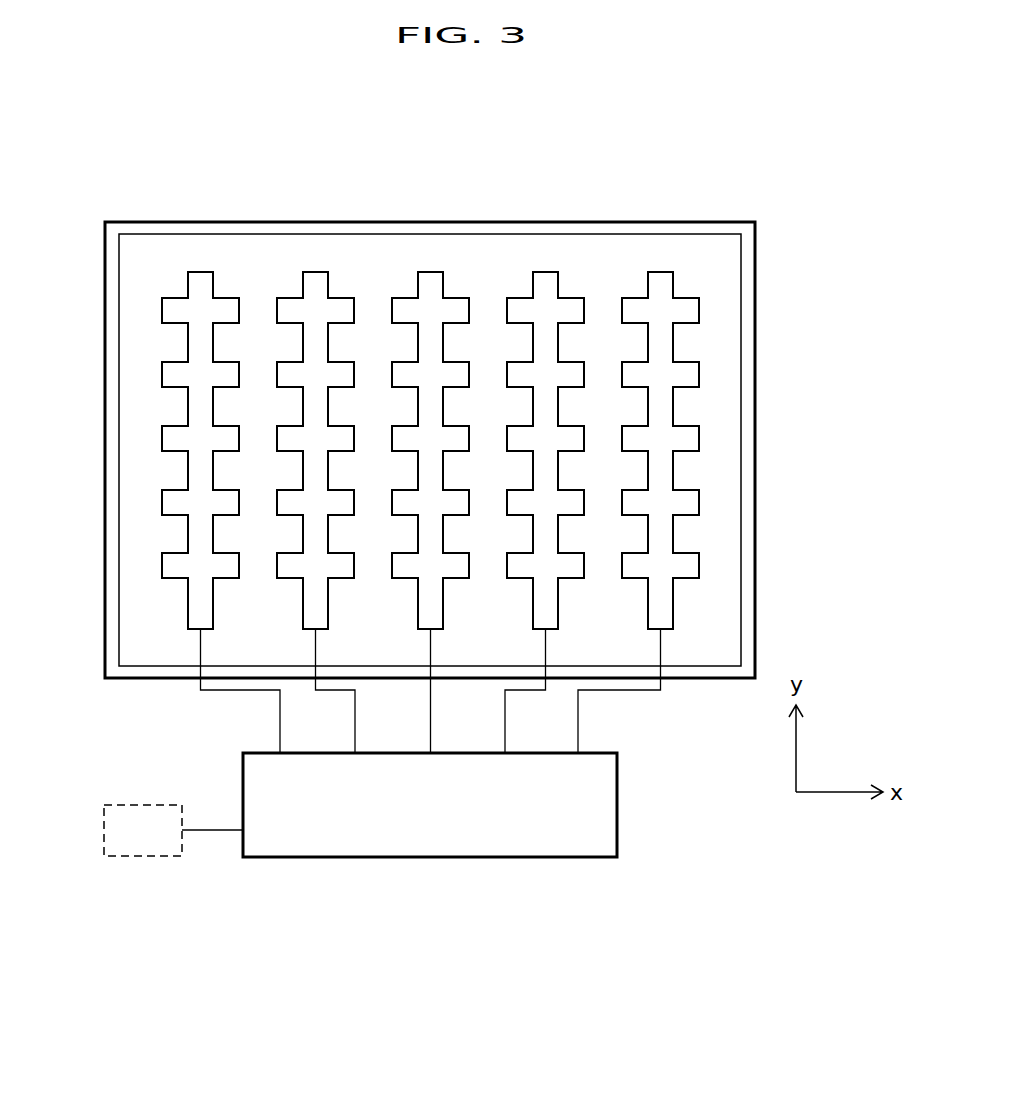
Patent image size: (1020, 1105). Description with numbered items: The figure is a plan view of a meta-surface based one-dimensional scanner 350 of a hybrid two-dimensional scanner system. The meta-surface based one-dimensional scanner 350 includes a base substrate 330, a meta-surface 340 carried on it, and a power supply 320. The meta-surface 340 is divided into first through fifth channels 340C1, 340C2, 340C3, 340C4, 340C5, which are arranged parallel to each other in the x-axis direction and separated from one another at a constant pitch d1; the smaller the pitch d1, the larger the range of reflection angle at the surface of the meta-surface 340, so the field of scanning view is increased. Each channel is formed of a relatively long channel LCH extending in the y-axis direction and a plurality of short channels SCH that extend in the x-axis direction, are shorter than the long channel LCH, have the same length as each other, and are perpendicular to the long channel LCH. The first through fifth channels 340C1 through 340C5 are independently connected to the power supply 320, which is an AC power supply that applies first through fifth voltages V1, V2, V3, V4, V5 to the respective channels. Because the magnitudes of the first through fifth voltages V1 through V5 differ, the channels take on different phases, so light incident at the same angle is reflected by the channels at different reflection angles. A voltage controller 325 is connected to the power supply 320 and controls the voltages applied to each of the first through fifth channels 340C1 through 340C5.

The meta-surface based 1D scanner 350 is at (786, 207).
The base substrate 330 is at (755, 345).
The meta-surface 340 is at (742, 450).
The first channel 340C1 is at (208, 245).
The second channel 340C2 is at (322, 245).
The third channel 340C3 is at (438, 245).
The fourth channel 340C4 is at (552, 245).
The fifth channel 340C5 is at (668, 245).
The short channel SCH is at (162, 435).
The long channel LCH is at (190, 602).
The pitch d1 is at (304, 349).
The first voltage V1 is at (241, 691).
The second voltage V2 is at (336, 691).
The third voltage V3 is at (413, 691).
The fourth voltage V4 is at (508, 691).
The fifth voltage V5 is at (603, 691).
The power supply 320 is at (430, 857).
The voltage controller 325 is at (142, 857).